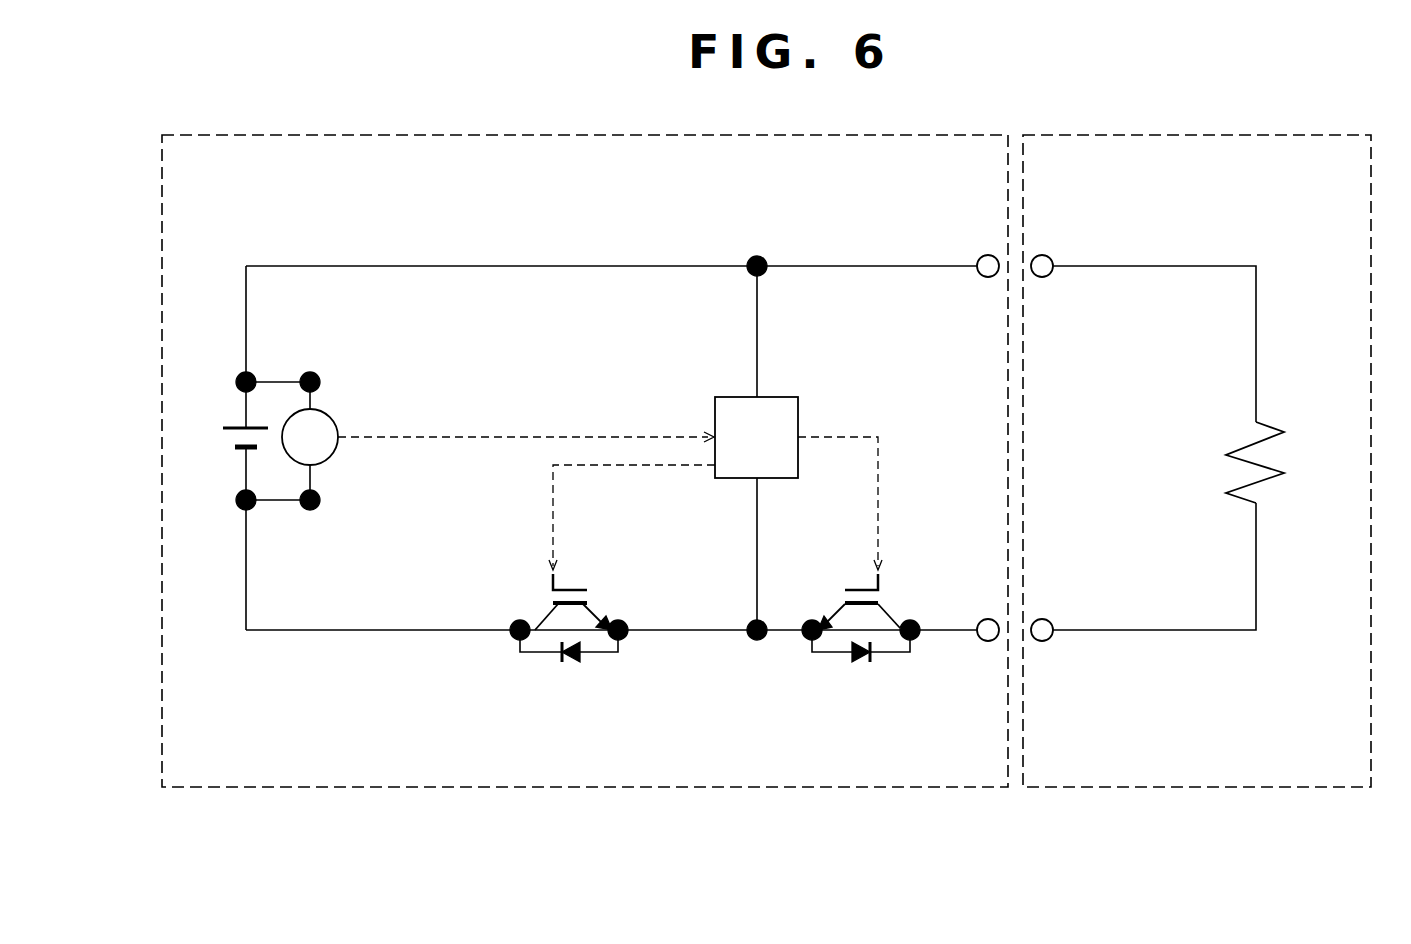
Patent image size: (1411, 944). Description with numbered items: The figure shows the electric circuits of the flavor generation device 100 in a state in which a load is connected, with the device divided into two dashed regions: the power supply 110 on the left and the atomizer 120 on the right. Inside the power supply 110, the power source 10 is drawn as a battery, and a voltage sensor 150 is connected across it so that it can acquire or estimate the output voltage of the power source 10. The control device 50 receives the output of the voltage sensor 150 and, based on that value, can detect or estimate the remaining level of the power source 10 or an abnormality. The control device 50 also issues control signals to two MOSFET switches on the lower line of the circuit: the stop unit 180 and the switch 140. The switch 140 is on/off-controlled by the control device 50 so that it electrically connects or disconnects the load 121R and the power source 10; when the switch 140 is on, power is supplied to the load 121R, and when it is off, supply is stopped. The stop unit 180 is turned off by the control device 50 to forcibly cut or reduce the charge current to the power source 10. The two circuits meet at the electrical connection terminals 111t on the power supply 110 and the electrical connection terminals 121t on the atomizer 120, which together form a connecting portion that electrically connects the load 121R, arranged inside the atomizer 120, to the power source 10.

The flavor generation device 100 is at (766, 461).
The power supply 110 is at (700, 790).
The atomizer 120 is at (1175, 790).
The power source 10 is at (212, 416).
The voltage sensor 150 is at (330, 412).
The control device 50 is at (727, 397).
The stop unit 180 is at (573, 682).
The switch 140 is at (885, 656).
The electrical connection terminal 111t is at (981, 257).
The electrical connection terminal 121t is at (1049, 257).
The load 121R is at (1287, 388).